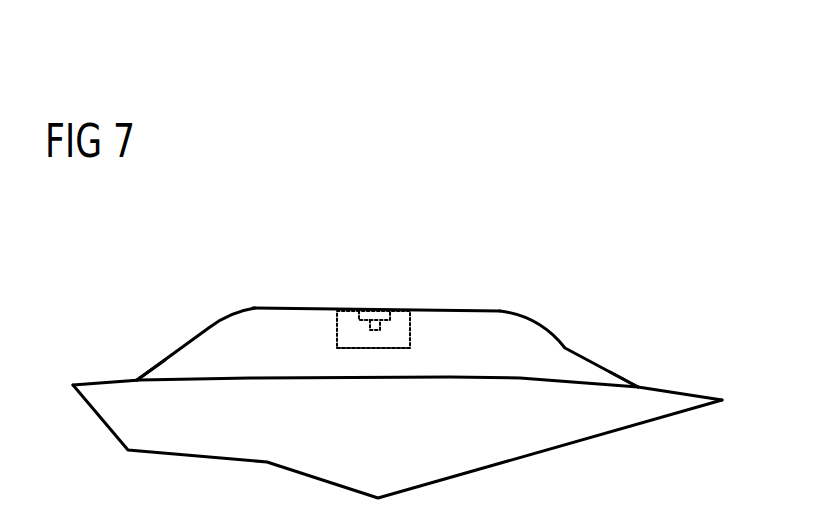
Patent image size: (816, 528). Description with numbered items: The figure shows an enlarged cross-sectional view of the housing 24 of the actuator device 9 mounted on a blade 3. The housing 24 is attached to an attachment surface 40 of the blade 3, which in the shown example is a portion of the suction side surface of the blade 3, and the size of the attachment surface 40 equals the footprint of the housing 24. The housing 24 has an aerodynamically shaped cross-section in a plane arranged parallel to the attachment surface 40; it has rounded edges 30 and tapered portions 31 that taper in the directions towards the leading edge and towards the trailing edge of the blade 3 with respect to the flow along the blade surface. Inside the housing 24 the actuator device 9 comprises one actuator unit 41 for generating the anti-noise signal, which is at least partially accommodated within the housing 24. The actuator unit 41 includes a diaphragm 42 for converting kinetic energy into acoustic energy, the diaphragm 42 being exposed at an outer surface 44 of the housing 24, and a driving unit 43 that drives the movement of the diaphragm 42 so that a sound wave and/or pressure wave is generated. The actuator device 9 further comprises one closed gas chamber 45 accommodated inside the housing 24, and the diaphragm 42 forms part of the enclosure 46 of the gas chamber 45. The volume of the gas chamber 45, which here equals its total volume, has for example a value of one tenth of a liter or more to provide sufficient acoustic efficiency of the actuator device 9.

The blade 3 is at (690, 392).
The actuator device 9 is at (383, 340).
The housing 24 is at (383, 340).
The rounded edges 30 is at (222, 318).
The tapered portions 31 is at (160, 368).
The attachment surface 40 is at (515, 380).
The actuator unit 41 is at (365, 265).
The diaphragm 42 is at (393, 317).
The driving unit 43 is at (352, 287).
The outer surface 44 is at (507, 312).
The gas chamber 45 is at (337, 327).
The enclosure 46 is at (379, 348).